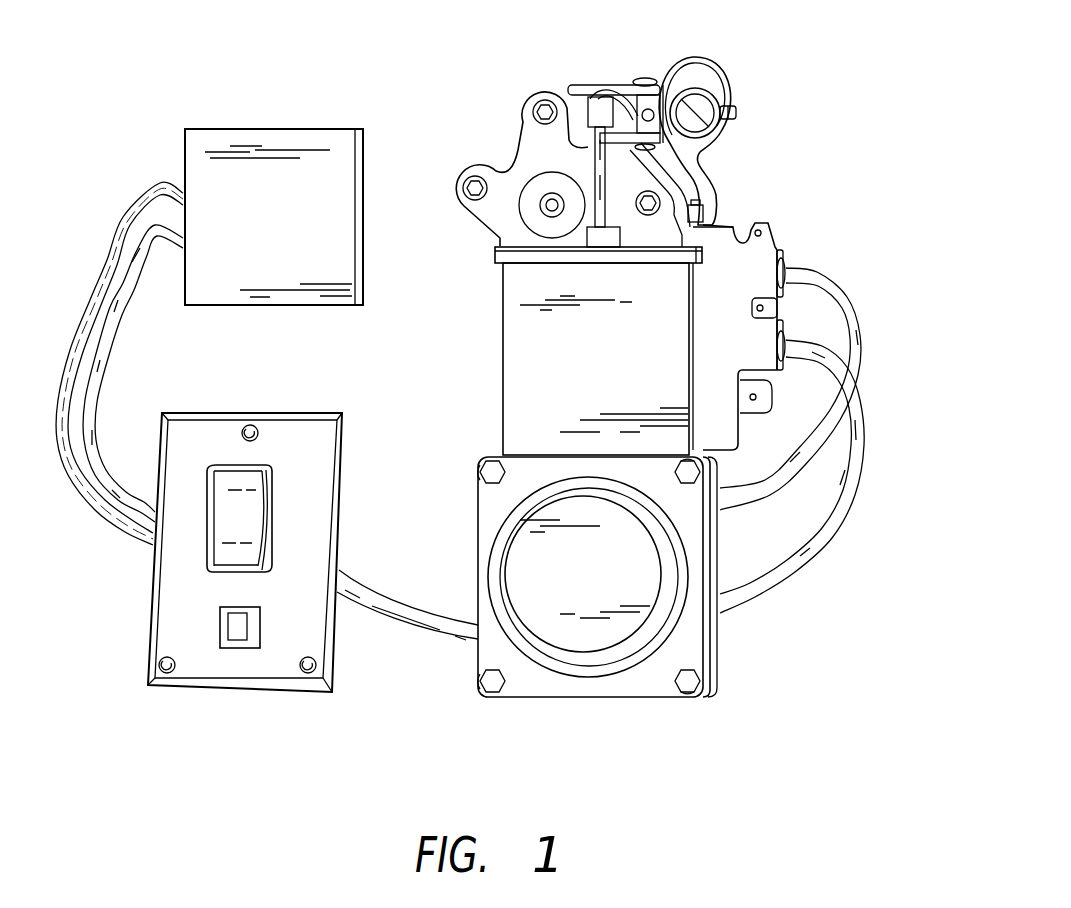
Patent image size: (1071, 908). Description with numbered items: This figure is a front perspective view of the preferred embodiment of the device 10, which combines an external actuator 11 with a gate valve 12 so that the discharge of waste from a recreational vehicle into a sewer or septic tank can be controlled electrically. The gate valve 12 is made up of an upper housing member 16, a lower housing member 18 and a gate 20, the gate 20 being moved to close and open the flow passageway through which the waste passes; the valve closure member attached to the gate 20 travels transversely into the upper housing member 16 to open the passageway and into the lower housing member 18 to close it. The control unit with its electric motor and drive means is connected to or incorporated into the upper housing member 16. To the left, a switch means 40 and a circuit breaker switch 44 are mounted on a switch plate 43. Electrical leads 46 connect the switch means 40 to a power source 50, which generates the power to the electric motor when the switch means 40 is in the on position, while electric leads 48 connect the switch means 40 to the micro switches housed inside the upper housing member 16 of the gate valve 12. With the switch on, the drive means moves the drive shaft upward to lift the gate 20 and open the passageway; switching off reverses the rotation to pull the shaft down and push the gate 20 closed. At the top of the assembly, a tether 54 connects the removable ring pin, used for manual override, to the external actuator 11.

The device 10 is at (792, 161).
The external actuator 11 is at (432, 700).
The gate valve 12 is at (720, 645).
The upper housing member 16 is at (517, 283).
The lower housing member 18 is at (487, 492).
The gate 20 is at (596, 590).
The switch means 40 is at (223, 557).
The switch plate 43 is at (318, 448).
The circuit breaker switch 44 is at (237, 638).
The electrical leads 46 is at (57, 443).
The electric leads 48 is at (835, 497).
The power source 50 is at (183, 143).
The tether 54 is at (697, 62).